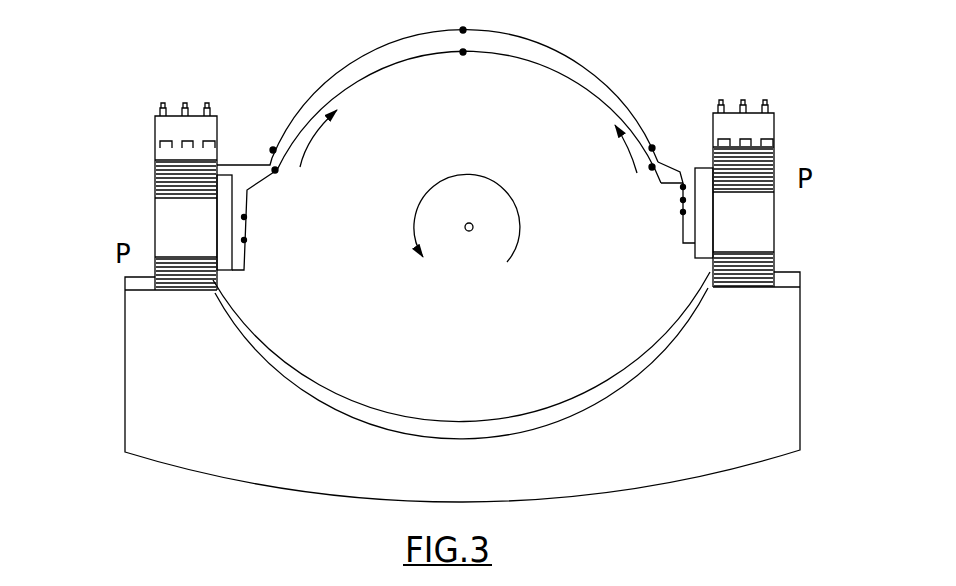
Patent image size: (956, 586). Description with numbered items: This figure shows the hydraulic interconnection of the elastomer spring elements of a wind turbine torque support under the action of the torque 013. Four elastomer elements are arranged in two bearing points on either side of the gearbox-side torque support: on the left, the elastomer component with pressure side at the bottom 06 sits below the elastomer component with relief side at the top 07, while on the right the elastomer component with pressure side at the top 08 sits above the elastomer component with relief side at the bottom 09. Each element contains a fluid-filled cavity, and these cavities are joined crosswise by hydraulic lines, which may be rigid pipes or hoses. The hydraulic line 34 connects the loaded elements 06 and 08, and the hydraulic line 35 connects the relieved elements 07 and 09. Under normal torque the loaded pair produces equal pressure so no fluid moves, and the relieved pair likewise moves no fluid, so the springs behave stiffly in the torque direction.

The elastomer component with pressure side at the bottom 06 is at (150, 262).
The elastomer component with relief side at the top 07 is at (150, 178).
The elastomer component with pressure side at the top 08 is at (778, 162).
The elastomer component with relief side at the bottom 09 is at (778, 258).
The torque 013 is at (527, 242).
The hydraulic line 34 is at (572, 77).
The hydraulic line 35 is at (602, 75).